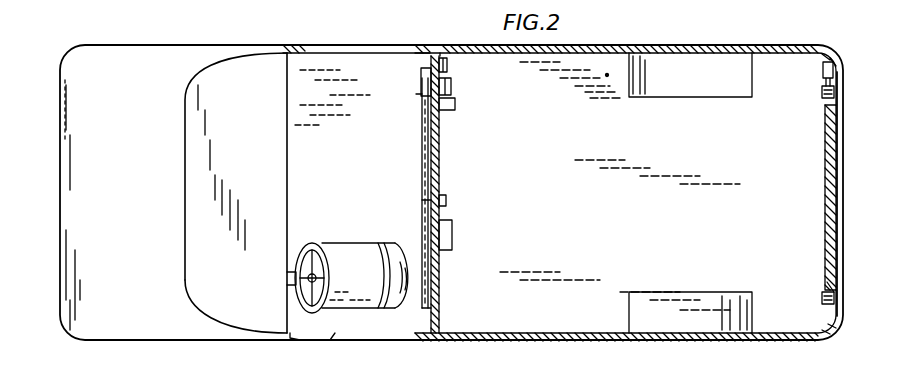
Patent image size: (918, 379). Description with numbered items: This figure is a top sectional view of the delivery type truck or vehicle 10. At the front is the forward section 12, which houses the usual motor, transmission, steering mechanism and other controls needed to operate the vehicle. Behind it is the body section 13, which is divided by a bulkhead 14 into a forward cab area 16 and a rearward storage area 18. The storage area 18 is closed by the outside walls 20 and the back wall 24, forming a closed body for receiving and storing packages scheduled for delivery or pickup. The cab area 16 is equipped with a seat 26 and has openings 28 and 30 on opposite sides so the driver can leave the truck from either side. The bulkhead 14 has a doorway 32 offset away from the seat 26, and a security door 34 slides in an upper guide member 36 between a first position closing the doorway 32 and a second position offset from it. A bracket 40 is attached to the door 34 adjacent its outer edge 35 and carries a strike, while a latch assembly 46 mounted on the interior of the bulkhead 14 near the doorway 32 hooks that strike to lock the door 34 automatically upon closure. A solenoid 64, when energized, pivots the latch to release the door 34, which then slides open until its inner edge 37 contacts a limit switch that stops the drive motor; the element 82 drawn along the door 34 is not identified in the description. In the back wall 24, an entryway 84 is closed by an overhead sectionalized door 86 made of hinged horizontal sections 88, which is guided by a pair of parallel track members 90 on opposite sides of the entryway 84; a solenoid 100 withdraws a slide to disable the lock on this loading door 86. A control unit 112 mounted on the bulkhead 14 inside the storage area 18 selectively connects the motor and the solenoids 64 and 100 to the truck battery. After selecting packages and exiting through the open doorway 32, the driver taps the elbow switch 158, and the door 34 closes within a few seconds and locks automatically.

The vehicle 10 is at (288, 44).
The forward section 12 is at (120, 221).
The body section 13 is at (446, 44).
The bulkhead 14 is at (439, 280).
The forward cab area 16 is at (343, 221).
The rearward storage area 18 is at (593, 221).
The outside walls 20 is at (658, 46).
The back wall 24 is at (842, 82).
The seat 26 is at (347, 267).
The opening 28 is at (322, 340).
The opening 30 is at (300, 47).
The doorway 32 is at (443, 197).
The security door 34 is at (422, 118).
The outer edge 35 is at (419, 95).
The upper guide member 36 is at (422, 312).
The inner edge 37 is at (428, 204).
The bracket 40 is at (455, 105).
The latch assembly 46 is at (451, 88).
The solenoid 64 is at (447, 65).
The seal line 82 is at (424, 150).
The entryway 84 is at (836, 286).
The sectionalized door 86 is at (824, 131).
The door sections 88 is at (826, 208).
The track members 90 is at (822, 92).
The solenoid 100 is at (822, 70).
The control unit 112 is at (446, 236).
The elbow switch 158 is at (420, 80).